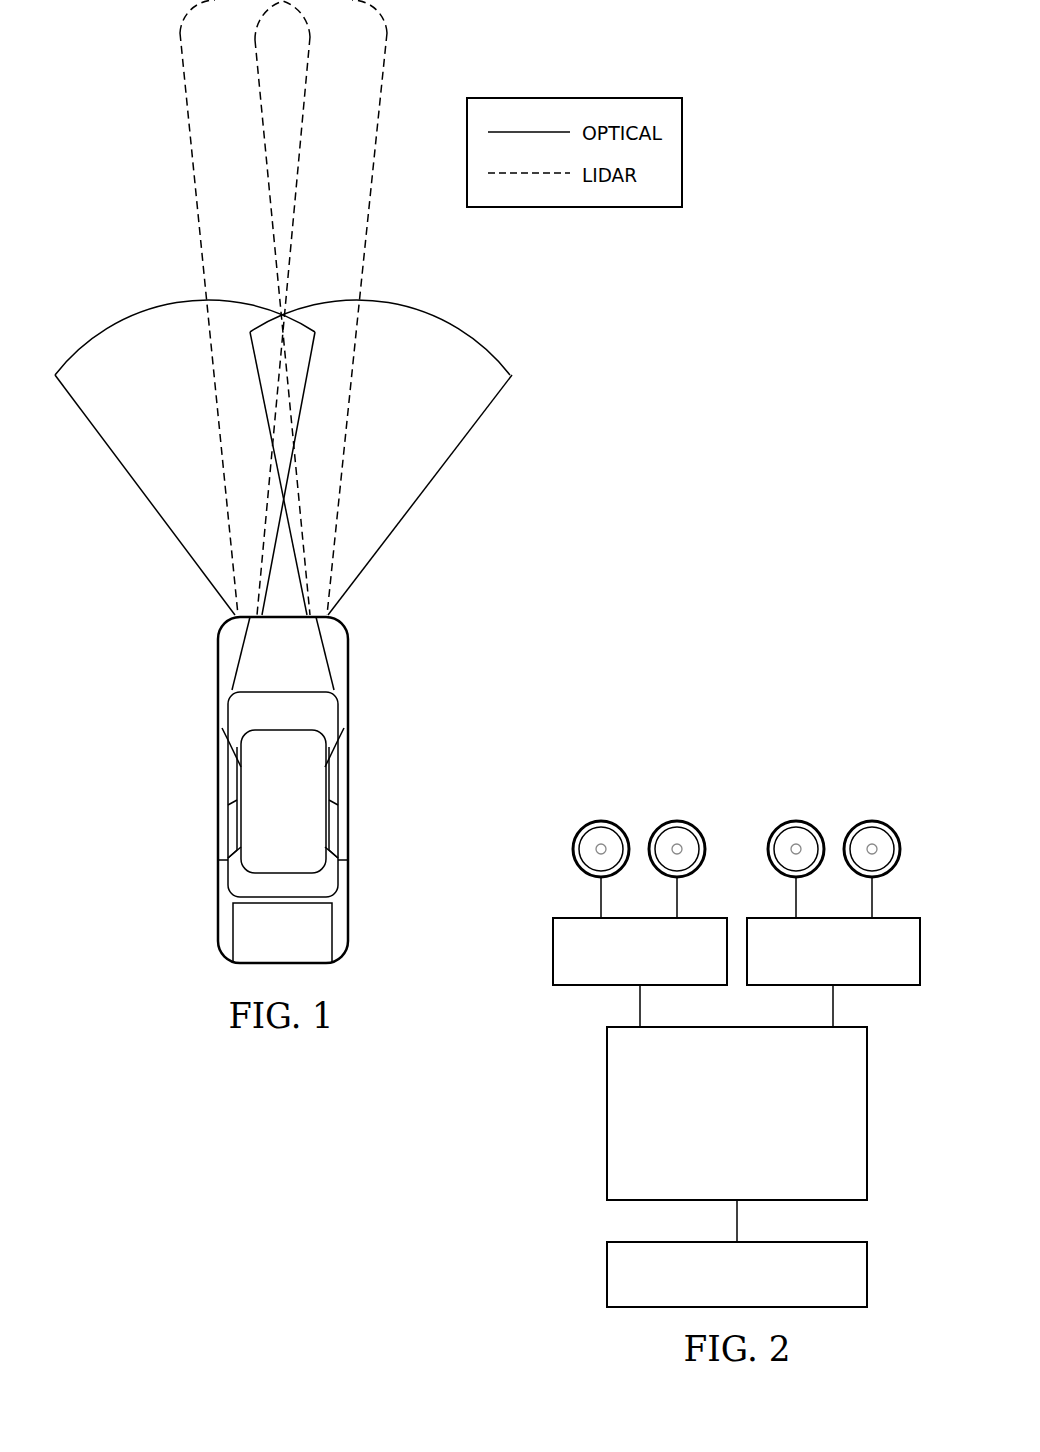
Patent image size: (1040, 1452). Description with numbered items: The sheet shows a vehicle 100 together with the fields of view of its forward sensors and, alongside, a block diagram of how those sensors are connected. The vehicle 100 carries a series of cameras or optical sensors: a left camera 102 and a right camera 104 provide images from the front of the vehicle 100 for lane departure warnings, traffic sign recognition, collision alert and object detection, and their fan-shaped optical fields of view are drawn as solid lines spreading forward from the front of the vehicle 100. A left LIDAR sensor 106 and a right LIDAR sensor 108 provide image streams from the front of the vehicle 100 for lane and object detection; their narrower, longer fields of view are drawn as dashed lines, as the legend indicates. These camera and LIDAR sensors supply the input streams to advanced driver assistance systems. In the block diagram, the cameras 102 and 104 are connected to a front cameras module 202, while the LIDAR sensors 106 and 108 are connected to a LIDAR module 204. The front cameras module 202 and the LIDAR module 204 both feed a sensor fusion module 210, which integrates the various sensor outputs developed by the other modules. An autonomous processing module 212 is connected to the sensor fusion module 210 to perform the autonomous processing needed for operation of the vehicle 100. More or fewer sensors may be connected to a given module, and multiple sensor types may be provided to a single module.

In FIG. 1, the vehicle 100 is at (218, 790).
In FIG. 1, the left camera 102 is at (163, 302).
In FIG. 2, the left camera 102 is at (590, 822).
In FIG. 1, the right camera 104 is at (400, 302).
In FIG. 2, the right camera 104 is at (665, 822).
In FIG. 1, the left LIDAR sensor 106 is at (192, 157).
In FIG. 2, the left LIDAR sensor 106 is at (808, 822).
In FIG. 1, the right LIDAR sensor 108 is at (373, 157).
In FIG. 2, the right LIDAR sensor 108 is at (883, 822).
In FIG. 2, the front cameras module 202 is at (587, 987).
In FIG. 2, the LIDAR module 204 is at (887, 987).
In FIG. 2, the sensor fusion module 210 is at (717, 1145).
In FIG. 2, the autonomous processing module 212 is at (867, 1275).